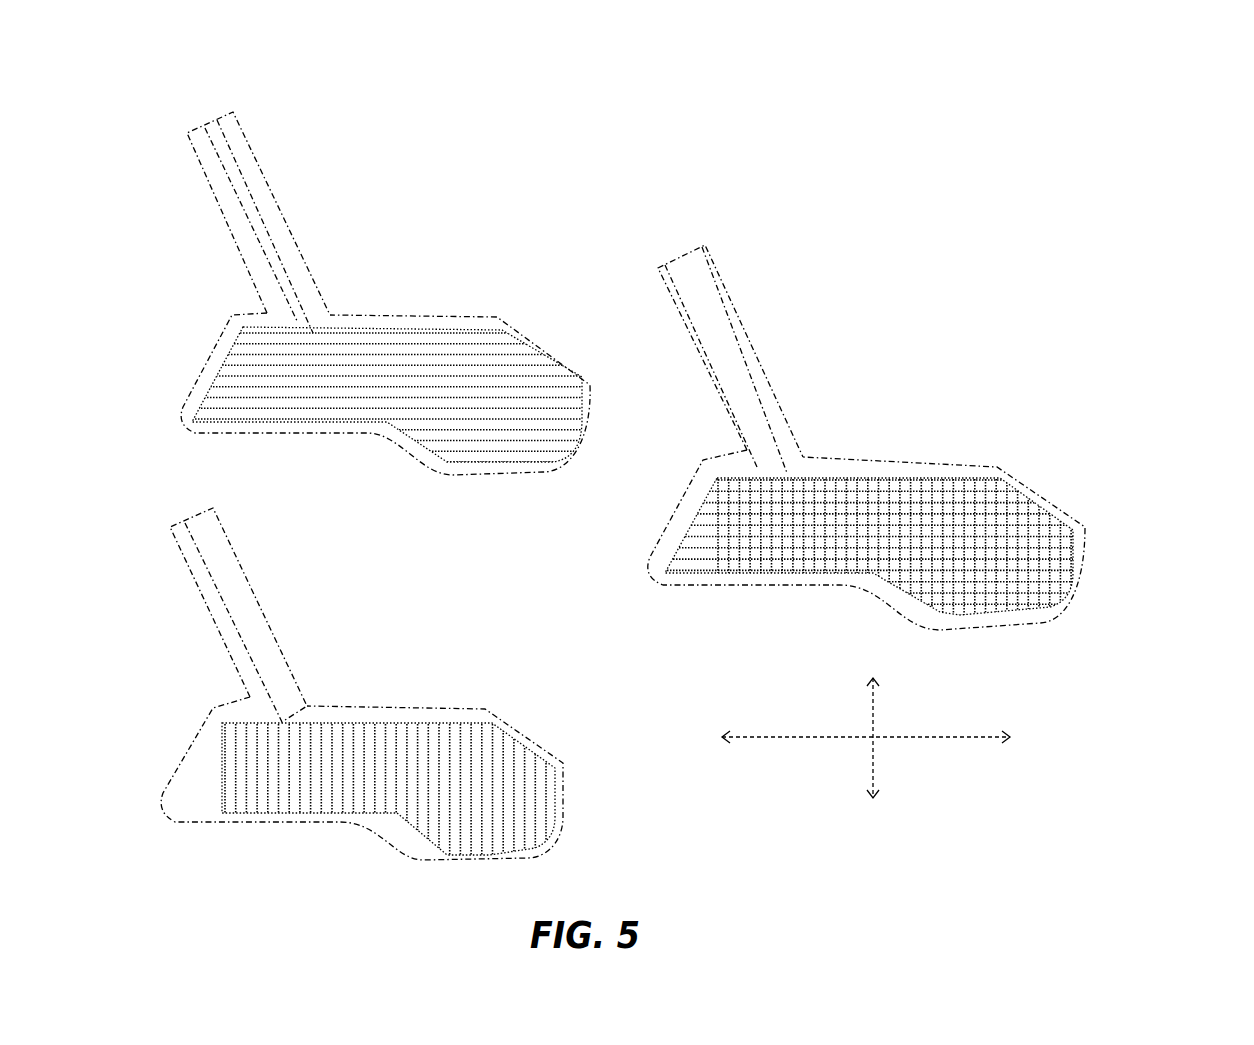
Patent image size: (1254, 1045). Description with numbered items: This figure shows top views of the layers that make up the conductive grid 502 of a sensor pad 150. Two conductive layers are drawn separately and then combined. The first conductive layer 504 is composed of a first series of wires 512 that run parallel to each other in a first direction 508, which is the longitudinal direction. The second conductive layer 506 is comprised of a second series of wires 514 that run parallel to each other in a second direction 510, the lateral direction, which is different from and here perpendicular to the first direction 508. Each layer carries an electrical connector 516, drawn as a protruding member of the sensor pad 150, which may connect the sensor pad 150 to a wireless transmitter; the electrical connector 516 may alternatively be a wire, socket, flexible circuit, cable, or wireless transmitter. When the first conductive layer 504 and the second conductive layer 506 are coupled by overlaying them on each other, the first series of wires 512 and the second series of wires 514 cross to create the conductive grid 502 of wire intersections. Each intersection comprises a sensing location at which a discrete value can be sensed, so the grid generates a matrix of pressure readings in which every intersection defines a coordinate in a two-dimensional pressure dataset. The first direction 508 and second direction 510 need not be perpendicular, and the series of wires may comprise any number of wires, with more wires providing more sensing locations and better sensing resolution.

The sensor pad 150 is at (1053, 120).
The conductive grid 502 is at (960, 458).
The first conductive layer 504 is at (410, 340).
The second conductive layer 506 is at (408, 739).
The first direction 508 is at (966, 740).
The second direction 510 is at (879, 773).
The first series of wires 512 is at (402, 313).
The second series of wires 514 is at (383, 708).
The electrical connector 516 is at (1070, 433).